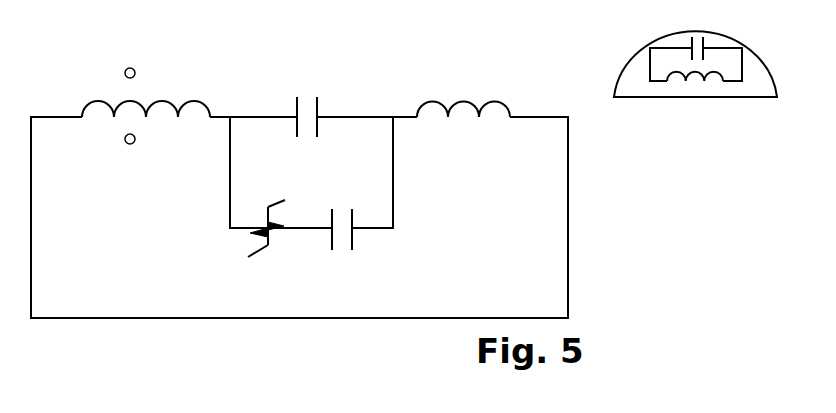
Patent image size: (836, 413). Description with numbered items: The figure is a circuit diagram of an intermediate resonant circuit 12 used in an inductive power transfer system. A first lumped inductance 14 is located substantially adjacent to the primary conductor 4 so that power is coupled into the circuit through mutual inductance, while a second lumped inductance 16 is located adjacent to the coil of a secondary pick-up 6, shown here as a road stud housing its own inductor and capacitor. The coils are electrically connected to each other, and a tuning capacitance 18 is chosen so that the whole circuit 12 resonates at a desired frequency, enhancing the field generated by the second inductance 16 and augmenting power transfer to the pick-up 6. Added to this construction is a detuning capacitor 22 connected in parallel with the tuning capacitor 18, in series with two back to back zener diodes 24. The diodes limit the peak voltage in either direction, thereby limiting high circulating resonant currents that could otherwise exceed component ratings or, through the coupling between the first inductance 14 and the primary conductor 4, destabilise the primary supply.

The primary conductor 4 is at (134, 69).
The secondary pick-up 6 is at (622, 70).
The intermediate resonant circuit 12 is at (623, 153).
The first lumped inductance 14 is at (168, 101).
The second lumped inductance 16 is at (447, 108).
The tuning capacitance 18 is at (318, 106).
The detuning capacitor 22 is at (353, 240).
The back to back zener diodes 24 is at (270, 242).